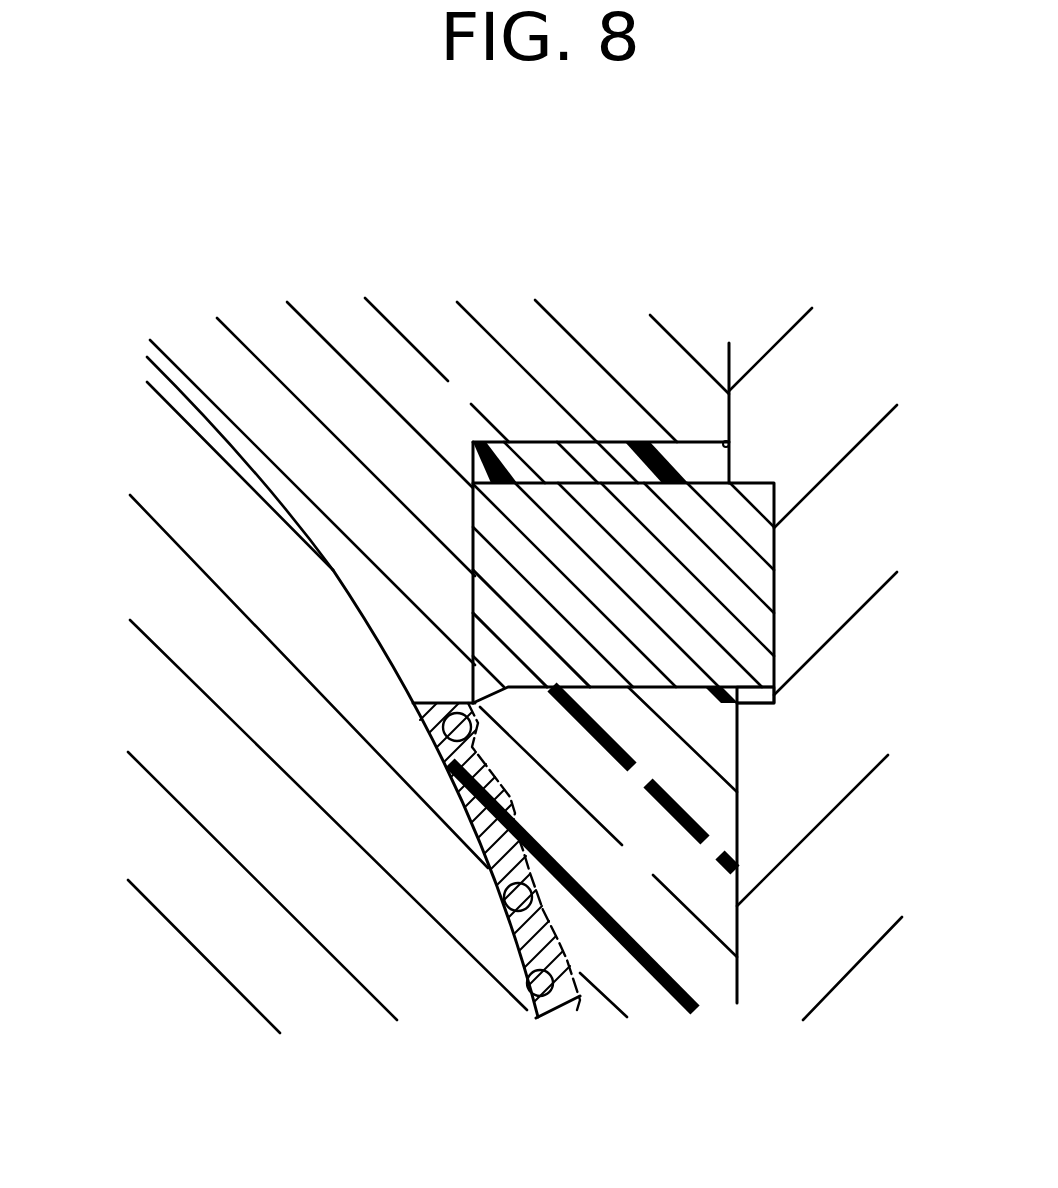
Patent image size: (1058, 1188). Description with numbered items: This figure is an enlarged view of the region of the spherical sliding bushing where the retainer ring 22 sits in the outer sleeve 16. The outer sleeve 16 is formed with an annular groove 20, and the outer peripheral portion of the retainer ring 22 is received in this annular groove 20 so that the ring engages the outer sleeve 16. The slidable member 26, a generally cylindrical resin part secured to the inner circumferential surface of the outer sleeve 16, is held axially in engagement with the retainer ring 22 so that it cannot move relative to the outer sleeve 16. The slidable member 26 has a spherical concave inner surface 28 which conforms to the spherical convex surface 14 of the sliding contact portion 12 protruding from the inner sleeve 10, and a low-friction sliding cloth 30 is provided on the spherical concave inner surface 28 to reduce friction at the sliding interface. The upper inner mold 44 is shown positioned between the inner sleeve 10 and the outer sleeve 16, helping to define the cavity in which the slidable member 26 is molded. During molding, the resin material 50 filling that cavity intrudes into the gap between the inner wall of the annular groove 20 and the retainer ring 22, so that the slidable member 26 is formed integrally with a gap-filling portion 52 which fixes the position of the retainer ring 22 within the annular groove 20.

The inner sleeve 10 is at (250, 392).
The spherical sliding contact portion 12 is at (330, 895).
The spherical convex surface 14 is at (532, 1002).
The outer sleeve 16 is at (856, 890).
The annular groove 20 is at (777, 528).
The retainer ring 22 is at (527, 645).
The slidable member 26 is at (683, 860).
The spherical concave inner surface 28 is at (487, 870).
The sliding cloth 30 is at (483, 758).
The upper inner mold 44 is at (500, 401).
The resin material 50 is at (647, 894).
The gap-filling portion 52 is at (780, 688).